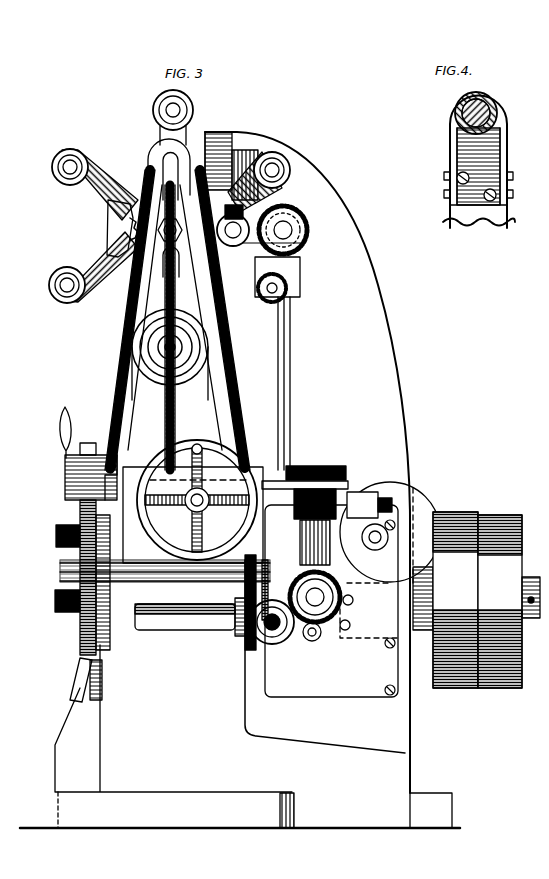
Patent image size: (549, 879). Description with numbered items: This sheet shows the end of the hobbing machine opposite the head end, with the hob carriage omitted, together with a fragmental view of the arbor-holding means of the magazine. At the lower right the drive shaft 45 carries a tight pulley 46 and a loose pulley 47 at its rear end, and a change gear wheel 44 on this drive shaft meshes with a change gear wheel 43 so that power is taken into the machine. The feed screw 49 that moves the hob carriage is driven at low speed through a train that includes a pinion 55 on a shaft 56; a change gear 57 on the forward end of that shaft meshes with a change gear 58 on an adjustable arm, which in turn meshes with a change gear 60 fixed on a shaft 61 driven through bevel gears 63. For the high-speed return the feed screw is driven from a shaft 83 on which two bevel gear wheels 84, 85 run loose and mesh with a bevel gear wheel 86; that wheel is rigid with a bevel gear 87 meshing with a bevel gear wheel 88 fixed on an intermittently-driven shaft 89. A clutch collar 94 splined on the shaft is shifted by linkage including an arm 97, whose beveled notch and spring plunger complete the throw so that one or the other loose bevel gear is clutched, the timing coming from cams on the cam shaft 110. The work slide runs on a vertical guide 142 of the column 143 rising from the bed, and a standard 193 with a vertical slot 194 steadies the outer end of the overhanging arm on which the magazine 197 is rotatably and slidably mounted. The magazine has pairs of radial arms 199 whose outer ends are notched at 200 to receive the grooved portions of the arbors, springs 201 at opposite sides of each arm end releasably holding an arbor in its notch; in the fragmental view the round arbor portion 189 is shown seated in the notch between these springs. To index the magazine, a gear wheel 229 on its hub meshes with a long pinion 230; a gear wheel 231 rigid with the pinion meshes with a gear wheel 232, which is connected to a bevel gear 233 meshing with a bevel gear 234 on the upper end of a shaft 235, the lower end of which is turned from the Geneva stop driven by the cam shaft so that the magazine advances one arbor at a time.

In FIG. 3, the change gear wheel 43 is at (35, 442).
In FIG. 3, the change gear wheel 44 is at (8, 655).
In FIG. 3, the drive shaft 45 is at (540, 590).
In FIG. 3, the tight pulley 46 is at (455, 690).
In FIG. 3, the loose pulley 47 is at (503, 690).
In FIG. 3, the feed screw 49 is at (188, 508).
In FIG. 3, the pinion 55 is at (245, 535).
In FIG. 3, the shaft 56 is at (57, 538).
In FIG. 3, the change gear 57 is at (80, 520).
In FIG. 3, the change gear 58 is at (80, 580).
In FIG. 3, the change gear 60 is at (80, 662).
In FIG. 3, the shaft 61 is at (172, 630).
In FIG. 3, the bevel gears 63 is at (275, 645).
In FIG. 3, the shaft 83 is at (385, 505).
In FIG. 3, the bevel gear wheel 84 is at (296, 466).
In FIG. 3, the bevel gear wheel 85 is at (340, 480).
In FIG. 3, the bevel gear wheel 86 is at (346, 553).
In FIG. 3, the bevel gear 87 is at (354, 602).
In FIG. 3, the bevel gear wheel 88 is at (320, 638).
In FIG. 3, the intermittently-driven shaft 89 is at (330, 612).
In FIG. 3, the clutch collar 94 is at (318, 468).
In FIG. 3, the arm 97 is at (302, 470).
In FIG. 3, the cam shaft 110 is at (377, 537).
In FIG. 3, the vertical guide 142 is at (216, 132).
In FIG. 3, the column 143 is at (375, 285).
In FIG. 4, the roller 189 is at (462, 100).
In FIG. 3, the standard 193 is at (150, 182).
In FIG. 3, the vertical slot 194 is at (240, 152).
In FIG. 3, the magazine 197 is at (110, 213).
In FIG. 3, the radial arms 199 is at (108, 222).
In FIG. 4, the radial arms 199 is at (445, 220).
In FIG. 4, the notch 200 is at (470, 140).
In FIG. 4, the springs 201 is at (450, 128).
In FIG. 3, the gear wheel 229 is at (158, 200).
In FIG. 3, the pinion 230 is at (236, 175).
In FIG. 3, the gear wheel 231 is at (262, 215).
In FIG. 3, the gear wheel 232 is at (300, 212).
In FIG. 3, the bevel gear 233 is at (310, 230).
In FIG. 3, the bevel gear 234 is at (300, 252).
In FIG. 3, the shaft 235 is at (292, 343).